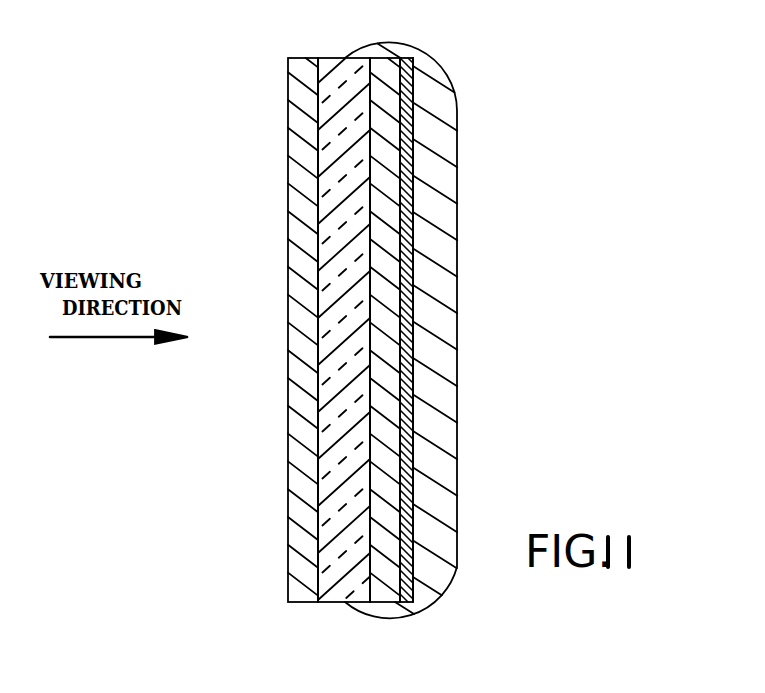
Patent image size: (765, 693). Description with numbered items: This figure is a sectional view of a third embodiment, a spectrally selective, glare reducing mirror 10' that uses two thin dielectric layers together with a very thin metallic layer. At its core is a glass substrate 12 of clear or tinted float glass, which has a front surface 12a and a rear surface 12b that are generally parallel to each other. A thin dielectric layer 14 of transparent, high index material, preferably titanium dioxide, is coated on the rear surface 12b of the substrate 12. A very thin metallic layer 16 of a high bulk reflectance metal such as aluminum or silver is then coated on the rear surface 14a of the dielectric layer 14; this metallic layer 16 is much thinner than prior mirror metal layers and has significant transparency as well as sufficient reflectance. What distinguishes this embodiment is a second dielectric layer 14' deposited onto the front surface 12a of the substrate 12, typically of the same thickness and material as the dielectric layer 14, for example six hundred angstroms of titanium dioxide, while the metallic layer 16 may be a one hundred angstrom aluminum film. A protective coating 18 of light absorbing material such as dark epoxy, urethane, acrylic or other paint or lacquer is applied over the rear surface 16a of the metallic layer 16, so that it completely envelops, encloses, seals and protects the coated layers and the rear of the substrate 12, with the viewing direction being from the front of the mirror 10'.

The mirror 10' is at (456, 310).
The glass substrate 12 is at (323, 152).
The front surface 12a is at (320, 372).
The rear surface 12b is at (403, 299).
The dielectric layer 14 is at (442, 330).
The second dielectric layer 14' is at (264, 330).
The rear surface of dielectric layer 14a is at (398, 374).
The metallic layer 16 is at (405, 232).
The rear surface of metallic layer 16a is at (413, 418).
The protective coating 18 is at (438, 113).